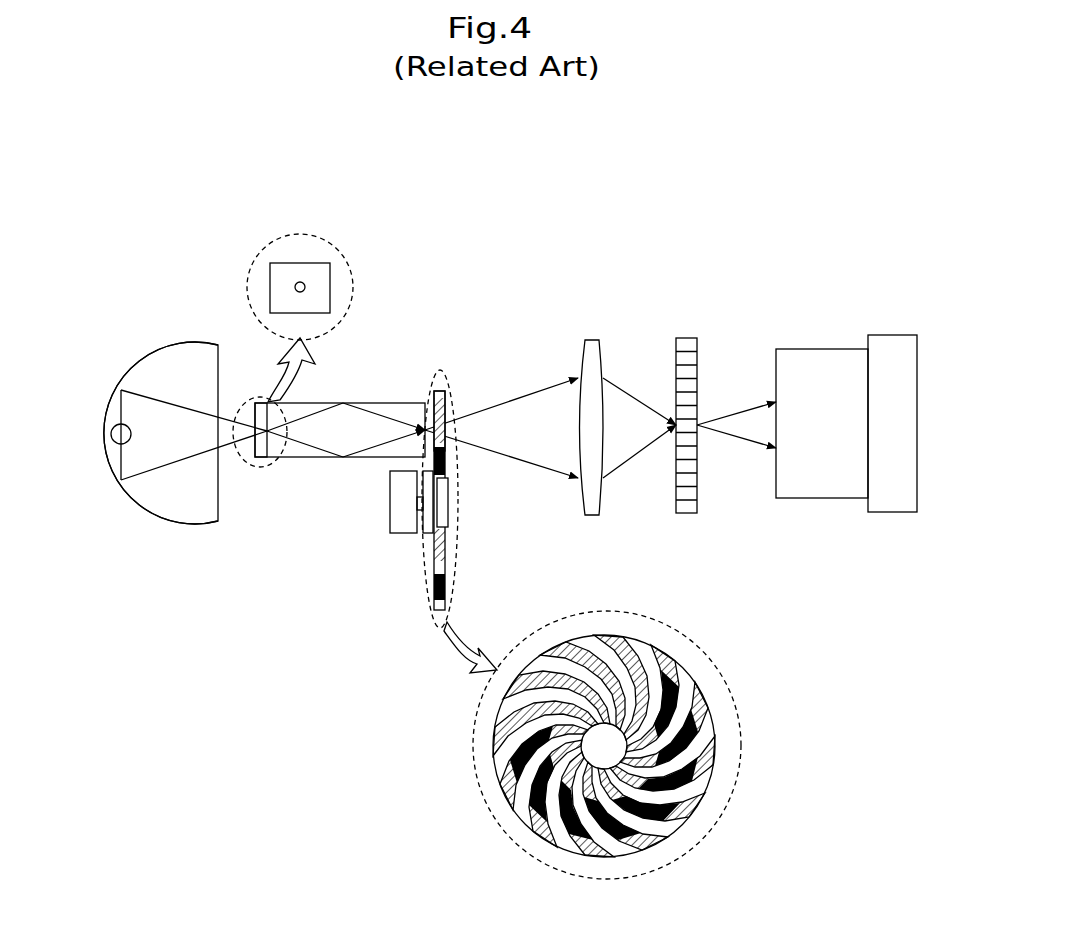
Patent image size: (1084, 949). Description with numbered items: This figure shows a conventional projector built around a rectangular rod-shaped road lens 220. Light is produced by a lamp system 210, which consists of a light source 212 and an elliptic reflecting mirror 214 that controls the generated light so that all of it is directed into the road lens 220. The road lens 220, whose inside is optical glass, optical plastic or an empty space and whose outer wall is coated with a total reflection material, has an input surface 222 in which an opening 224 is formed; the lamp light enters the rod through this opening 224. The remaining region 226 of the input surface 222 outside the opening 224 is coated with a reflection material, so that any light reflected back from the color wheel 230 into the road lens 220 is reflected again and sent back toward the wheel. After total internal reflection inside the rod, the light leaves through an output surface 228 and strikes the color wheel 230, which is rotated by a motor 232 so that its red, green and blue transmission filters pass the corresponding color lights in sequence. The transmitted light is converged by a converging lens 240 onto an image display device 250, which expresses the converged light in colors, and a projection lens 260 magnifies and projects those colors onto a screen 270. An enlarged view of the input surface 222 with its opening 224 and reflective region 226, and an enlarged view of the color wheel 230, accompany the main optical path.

The lamp system 210 is at (160, 340).
The light source 212 is at (111, 438).
The elliptic reflecting mirror 214 is at (190, 523).
The road lens 220 is at (366, 396).
The input surface 222 is at (262, 468).
The opening 224 is at (305, 287).
The remaining region 226 is at (280, 270).
The output surface 228 is at (433, 399).
The color wheel 230 is at (448, 562).
The motor 232 is at (390, 500).
The converging lens 240 is at (592, 346).
The image display device 250 is at (690, 356).
The projection lens 260 is at (808, 357).
The screen 270 is at (888, 335).